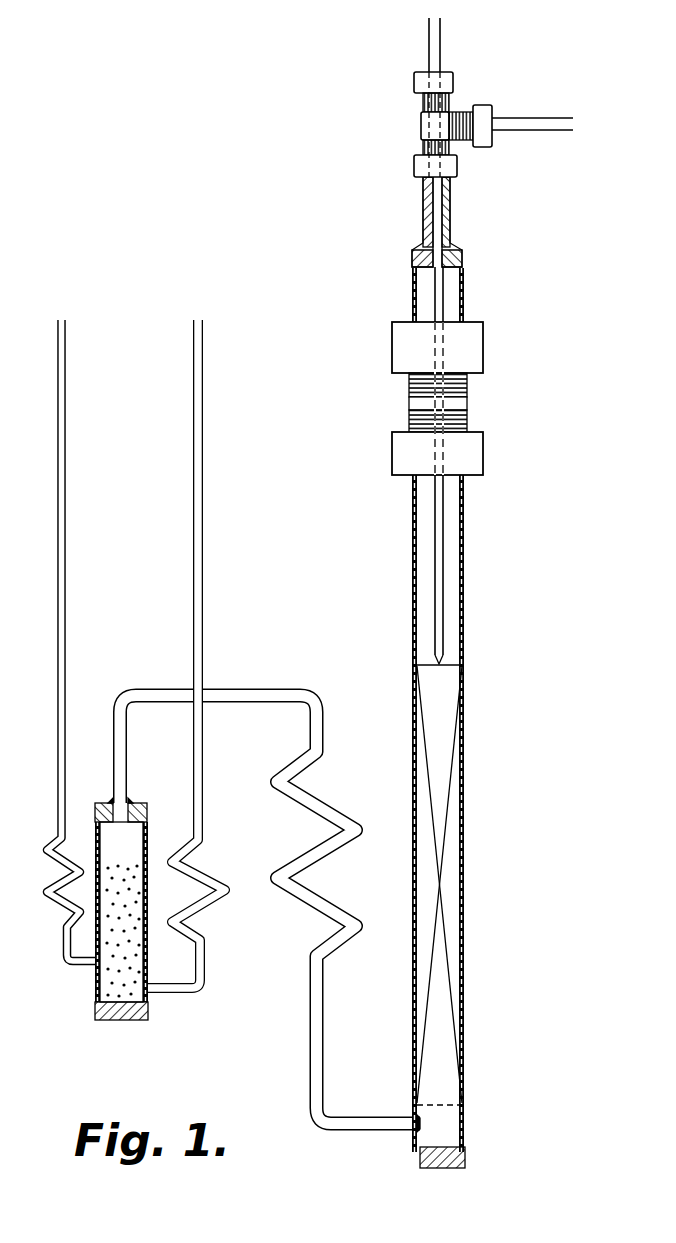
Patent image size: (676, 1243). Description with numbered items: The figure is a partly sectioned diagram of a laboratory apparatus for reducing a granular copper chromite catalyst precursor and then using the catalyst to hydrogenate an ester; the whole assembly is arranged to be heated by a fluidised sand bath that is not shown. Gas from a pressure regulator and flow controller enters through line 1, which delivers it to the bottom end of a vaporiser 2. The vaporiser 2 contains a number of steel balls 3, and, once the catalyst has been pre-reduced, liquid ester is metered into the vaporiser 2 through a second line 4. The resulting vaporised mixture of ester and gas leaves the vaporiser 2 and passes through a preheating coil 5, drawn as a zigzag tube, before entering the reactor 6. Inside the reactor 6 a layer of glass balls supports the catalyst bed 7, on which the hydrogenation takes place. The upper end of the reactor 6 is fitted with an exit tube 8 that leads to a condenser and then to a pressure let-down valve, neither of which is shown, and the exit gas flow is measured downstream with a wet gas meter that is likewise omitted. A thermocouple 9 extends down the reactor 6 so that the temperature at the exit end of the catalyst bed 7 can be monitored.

The line 1 is at (203, 496).
The vaporiser 2 is at (95, 988).
The steel balls 3 is at (117, 908).
The line 4 is at (57, 488).
The preheating coil 5 is at (327, 800).
The reactor 6 is at (468, 1000).
The catalyst bed 7 is at (458, 913).
The exit tube 8 is at (535, 131).
The thermocouple 9 is at (435, 553).